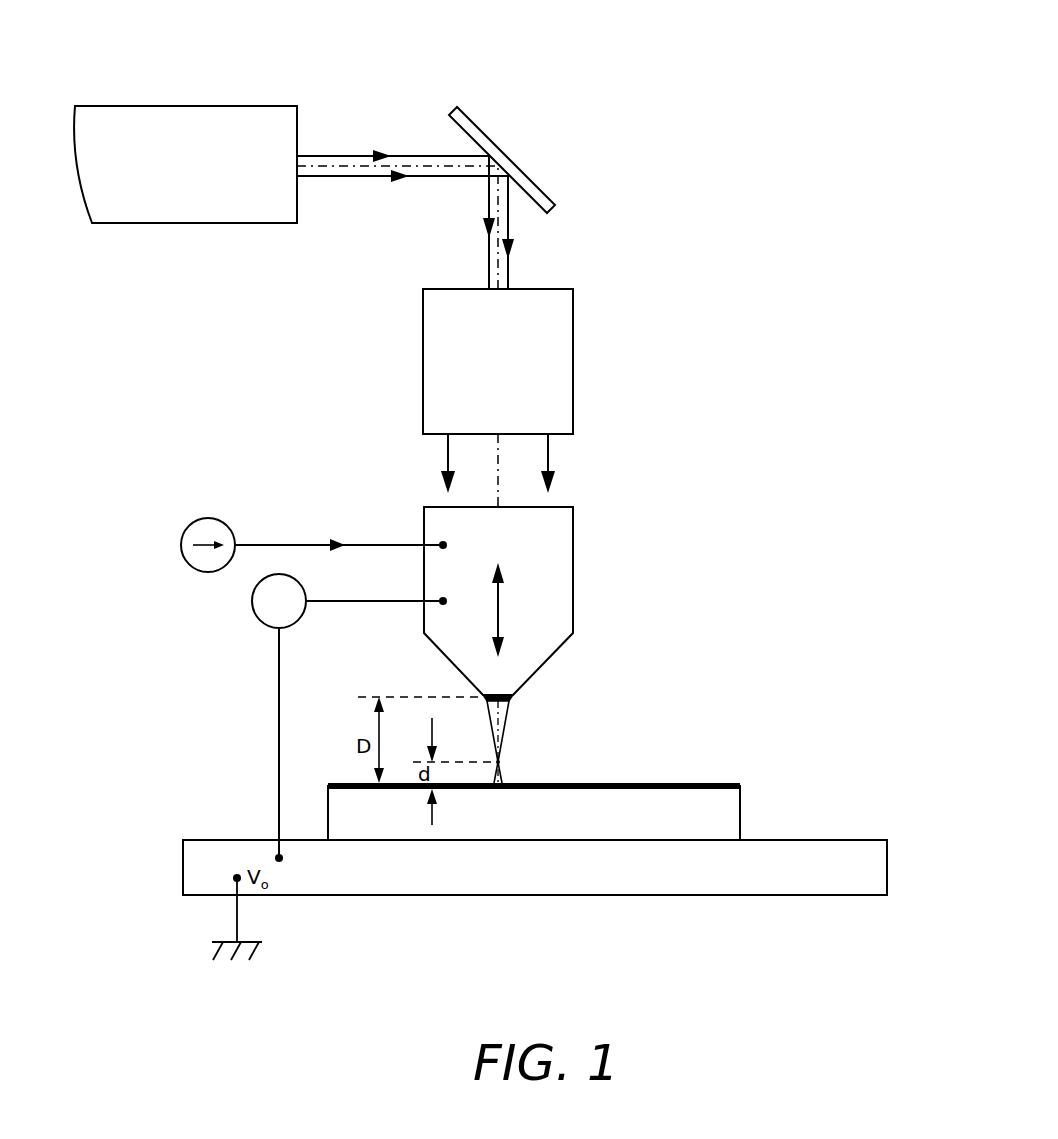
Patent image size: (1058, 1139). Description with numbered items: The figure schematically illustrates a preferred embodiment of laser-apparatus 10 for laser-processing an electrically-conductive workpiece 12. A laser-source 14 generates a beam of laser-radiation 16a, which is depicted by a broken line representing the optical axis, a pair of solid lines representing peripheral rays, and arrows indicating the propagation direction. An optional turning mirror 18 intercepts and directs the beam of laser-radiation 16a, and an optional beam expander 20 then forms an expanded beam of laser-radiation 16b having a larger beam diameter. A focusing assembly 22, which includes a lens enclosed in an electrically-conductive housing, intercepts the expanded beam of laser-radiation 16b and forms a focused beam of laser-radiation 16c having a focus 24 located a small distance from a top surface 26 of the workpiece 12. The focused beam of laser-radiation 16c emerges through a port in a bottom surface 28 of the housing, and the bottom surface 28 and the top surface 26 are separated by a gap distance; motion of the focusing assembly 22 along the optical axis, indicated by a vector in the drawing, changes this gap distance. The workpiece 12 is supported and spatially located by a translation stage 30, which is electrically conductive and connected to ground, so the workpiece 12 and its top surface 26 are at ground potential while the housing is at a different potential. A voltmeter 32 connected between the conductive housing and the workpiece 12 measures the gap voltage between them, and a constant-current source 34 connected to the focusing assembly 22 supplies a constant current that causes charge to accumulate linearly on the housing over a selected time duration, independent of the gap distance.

The laser-apparatus 10 is at (757, 128).
The workpiece 12 is at (682, 793).
The laser-source 14 is at (149, 113).
The beam of laser-radiation 16a is at (381, 125).
The expanded beam of laser-radiation 16b is at (572, 476).
The focused beam of laser-radiation 16c is at (516, 726).
The turning mirror 18 is at (545, 193).
The beam expander 20 is at (567, 373).
The focusing assembly 22 is at (567, 575).
The focus 24 is at (514, 760).
The top surface 26 is at (597, 790).
The bottom surface 28 is at (515, 697).
The translation stage 30 is at (830, 848).
The voltmeter 32 is at (252, 608).
The constant-current source 34 is at (205, 517).